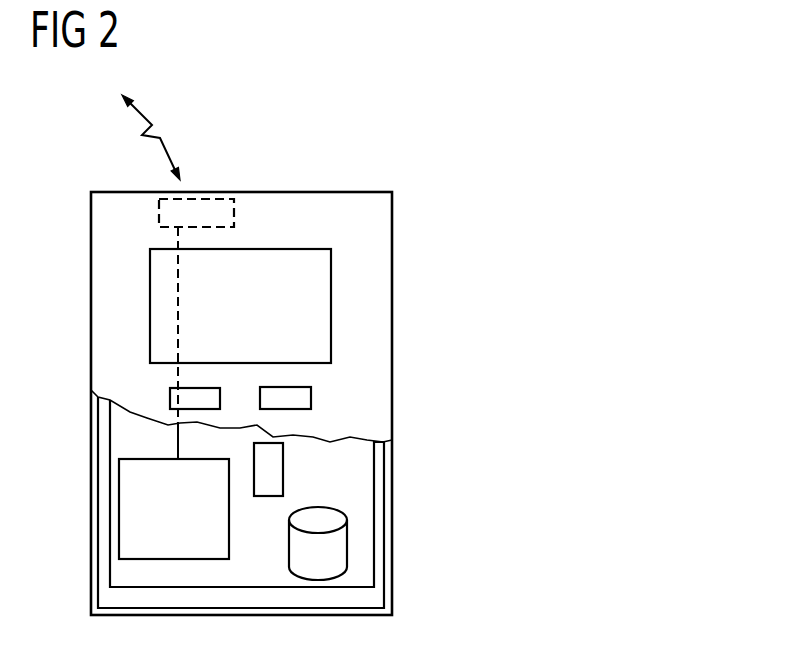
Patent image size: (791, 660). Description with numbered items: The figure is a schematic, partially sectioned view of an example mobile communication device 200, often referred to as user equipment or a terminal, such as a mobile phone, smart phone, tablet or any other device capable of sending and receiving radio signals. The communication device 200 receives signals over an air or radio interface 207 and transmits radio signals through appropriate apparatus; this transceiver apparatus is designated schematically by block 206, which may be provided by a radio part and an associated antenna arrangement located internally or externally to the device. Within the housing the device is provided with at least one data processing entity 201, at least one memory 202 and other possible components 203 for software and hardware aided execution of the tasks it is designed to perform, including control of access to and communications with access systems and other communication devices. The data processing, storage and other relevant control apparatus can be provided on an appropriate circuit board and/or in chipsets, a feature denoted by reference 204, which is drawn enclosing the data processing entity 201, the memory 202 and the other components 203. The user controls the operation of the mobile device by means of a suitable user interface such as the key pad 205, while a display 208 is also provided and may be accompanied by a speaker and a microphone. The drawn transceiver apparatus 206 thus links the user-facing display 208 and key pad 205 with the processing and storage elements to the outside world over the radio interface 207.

The communication device 200 is at (300, 192).
The data processing entity 201 is at (119, 506).
The memory 202 is at (347, 540).
The other possible components 203 is at (283, 467).
The circuit board and/or chipsets 204 is at (120, 574).
The key pad 205 is at (170, 397).
The transceiver apparatus 206 is at (234, 215).
The air or radio interface 207 is at (148, 124).
The display 208 is at (150, 308).